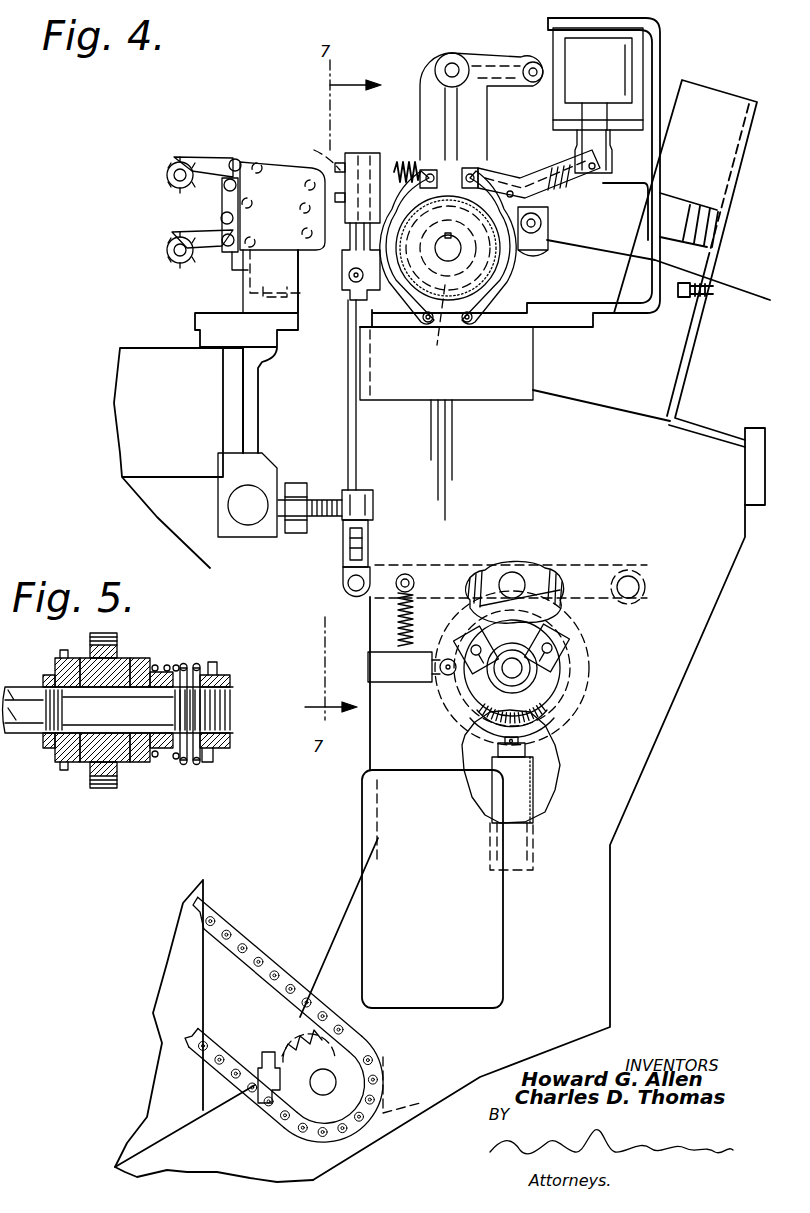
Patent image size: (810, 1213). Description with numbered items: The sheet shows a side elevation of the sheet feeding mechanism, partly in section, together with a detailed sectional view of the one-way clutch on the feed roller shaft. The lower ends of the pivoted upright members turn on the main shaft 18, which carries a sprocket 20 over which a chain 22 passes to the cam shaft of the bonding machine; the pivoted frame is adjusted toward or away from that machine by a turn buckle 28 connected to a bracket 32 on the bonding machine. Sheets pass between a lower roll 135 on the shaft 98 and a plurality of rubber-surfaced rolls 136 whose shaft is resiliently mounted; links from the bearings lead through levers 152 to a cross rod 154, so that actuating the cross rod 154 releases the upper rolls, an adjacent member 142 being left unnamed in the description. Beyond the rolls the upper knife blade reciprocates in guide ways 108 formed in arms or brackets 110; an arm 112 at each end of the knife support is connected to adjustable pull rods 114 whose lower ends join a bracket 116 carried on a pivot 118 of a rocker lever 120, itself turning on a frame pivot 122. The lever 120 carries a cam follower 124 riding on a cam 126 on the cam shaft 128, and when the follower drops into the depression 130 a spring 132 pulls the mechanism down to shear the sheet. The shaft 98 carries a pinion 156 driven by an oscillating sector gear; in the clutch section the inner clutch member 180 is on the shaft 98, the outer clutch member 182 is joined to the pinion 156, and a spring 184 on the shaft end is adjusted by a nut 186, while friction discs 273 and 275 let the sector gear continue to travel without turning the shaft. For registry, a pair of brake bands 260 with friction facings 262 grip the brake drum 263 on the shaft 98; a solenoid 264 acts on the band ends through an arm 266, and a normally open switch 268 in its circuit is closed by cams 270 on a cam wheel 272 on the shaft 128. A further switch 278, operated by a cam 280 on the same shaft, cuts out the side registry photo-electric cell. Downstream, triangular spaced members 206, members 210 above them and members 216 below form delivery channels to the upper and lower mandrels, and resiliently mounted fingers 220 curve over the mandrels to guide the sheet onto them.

In FIG. 4, the shaft 18 is at (328, 1080).
In FIG. 4, the pawl gear 20 is at (300, 1038).
In FIG. 4, the chain 22 is at (259, 951).
In FIG. 4, the turn buckle 28 is at (320, 495).
In FIG. 4, the bracket 32 is at (248, 537).
In FIG. 4, the shaft 98 is at (452, 262).
In FIG. 5, the shaft 98 is at (26, 726).
In FIG. 4, the guide ways 108 is at (314, 154).
In FIG. 4, the arms or brackets 110 is at (370, 155).
In FIG. 4, the arm 112 is at (348, 240).
In FIG. 4, the adjustable pull rods 114 is at (348, 377).
In FIG. 4, the bracket or member 116 is at (343, 533).
In FIG. 4, the pivot 118 is at (345, 583).
In FIG. 4, the rocker arm or lever 120 is at (456, 565).
In FIG. 4, the pivot 122 is at (630, 586).
In FIG. 4, the cam follower 124 is at (523, 580).
In FIG. 4, the cam 126 is at (488, 600).
In FIG. 4, the cam shaft 128 is at (502, 671).
In FIG. 4, the depression 130 is at (545, 600).
In FIG. 4, the spring 132 is at (395, 623).
In FIG. 4, the lower roll 135 is at (430, 330).
In FIG. 4, the rolls 136 is at (430, 160).
In FIG. 4, the arm 142 is at (425, 97).
In FIG. 4, the levers 152 is at (497, 53).
In FIG. 4, the cross rod 154 is at (533, 64).
In FIG. 5, the pinion 156 is at (115, 645).
In FIG. 5, the inner clutch member 180 is at (78, 762).
In FIG. 5, the outer clutch member 182 is at (122, 770).
In FIG. 5, the spring 184 is at (190, 664).
In FIG. 5, the nut 186 is at (205, 764).
In FIG. 4, the spaced members 206 is at (220, 202).
In FIG. 4, the spaced members 210 is at (248, 160).
In FIG. 4, the spaced members 216 is at (232, 256).
In FIG. 4, the fingers 220 is at (222, 157).
In FIG. 4, the brake bands 260 is at (418, 304).
In FIG. 4, the friction facings 262 is at (512, 267).
In FIG. 4, the brake drum 263 is at (470, 288).
In FIG. 4, the solenoid 264 is at (582, 78).
In FIG. 4, the arm 266 is at (565, 188).
In FIG. 4, the switch 268 is at (400, 682).
In FIG. 4, the cams 270 is at (563, 650).
In FIG. 4, the cam wheel 272 is at (490, 695).
In FIG. 5, the disc 273 is at (75, 660).
In FIG. 5, the disc 275 is at (137, 762).
In FIG. 4, the switch 278 is at (505, 795).
In FIG. 4, the cam 280 is at (540, 730).